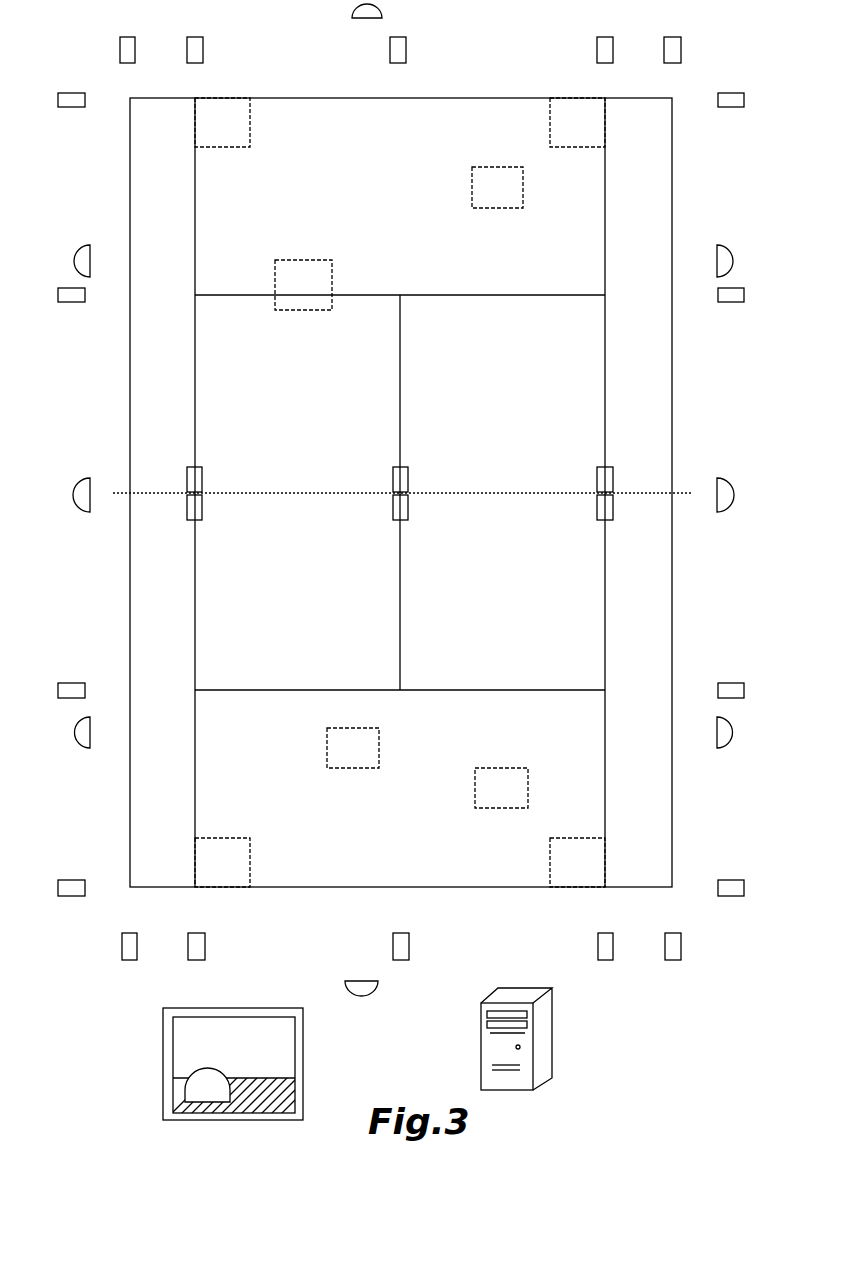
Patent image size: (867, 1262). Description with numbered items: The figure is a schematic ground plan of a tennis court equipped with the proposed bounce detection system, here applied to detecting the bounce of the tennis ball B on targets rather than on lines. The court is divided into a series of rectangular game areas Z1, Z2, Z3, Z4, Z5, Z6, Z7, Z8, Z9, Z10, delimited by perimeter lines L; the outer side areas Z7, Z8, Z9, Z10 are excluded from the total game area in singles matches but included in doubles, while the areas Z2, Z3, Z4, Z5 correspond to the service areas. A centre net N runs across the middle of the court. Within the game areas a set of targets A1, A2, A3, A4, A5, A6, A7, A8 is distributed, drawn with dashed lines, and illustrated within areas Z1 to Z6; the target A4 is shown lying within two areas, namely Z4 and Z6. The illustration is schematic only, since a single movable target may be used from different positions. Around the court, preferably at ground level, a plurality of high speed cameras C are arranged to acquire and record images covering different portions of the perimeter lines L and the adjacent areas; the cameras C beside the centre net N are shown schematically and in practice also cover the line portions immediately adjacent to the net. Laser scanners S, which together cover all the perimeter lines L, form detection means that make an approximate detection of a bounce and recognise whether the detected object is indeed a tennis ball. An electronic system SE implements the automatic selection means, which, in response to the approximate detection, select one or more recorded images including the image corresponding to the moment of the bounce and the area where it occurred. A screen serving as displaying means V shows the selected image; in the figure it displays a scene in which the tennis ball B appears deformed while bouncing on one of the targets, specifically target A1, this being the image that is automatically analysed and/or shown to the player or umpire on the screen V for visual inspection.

The target A1 is at (262, 1085).
The target A2 is at (577, 122).
The target A3 is at (497, 187).
The target A4 is at (303, 285).
The target A5 is at (222, 862).
The target A6 is at (577, 862).
The target A7 is at (353, 748).
The target A8 is at (501, 788).
The game area Z1 is at (400, 788).
The service area Z2 is at (297, 591).
The service area Z3 is at (502, 591).
The service area Z4 is at (297, 394).
The service area Z5 is at (502, 394).
The game area Z6 is at (400, 196).
The game area Z7 is at (162, 690).
The game area Z8 is at (162, 295).
The game area Z9 is at (638, 690).
The game area Z10 is at (638, 295).
The high speed camera C is at (399, 499).
The laser scanner S is at (403, 518).
The perimeter line L is at (238, 295).
The centre net N is at (403, 480).
The displaying means V is at (162, 1062).
The tennis ball B is at (207, 1074).
The electronic system SE is at (534, 1039).